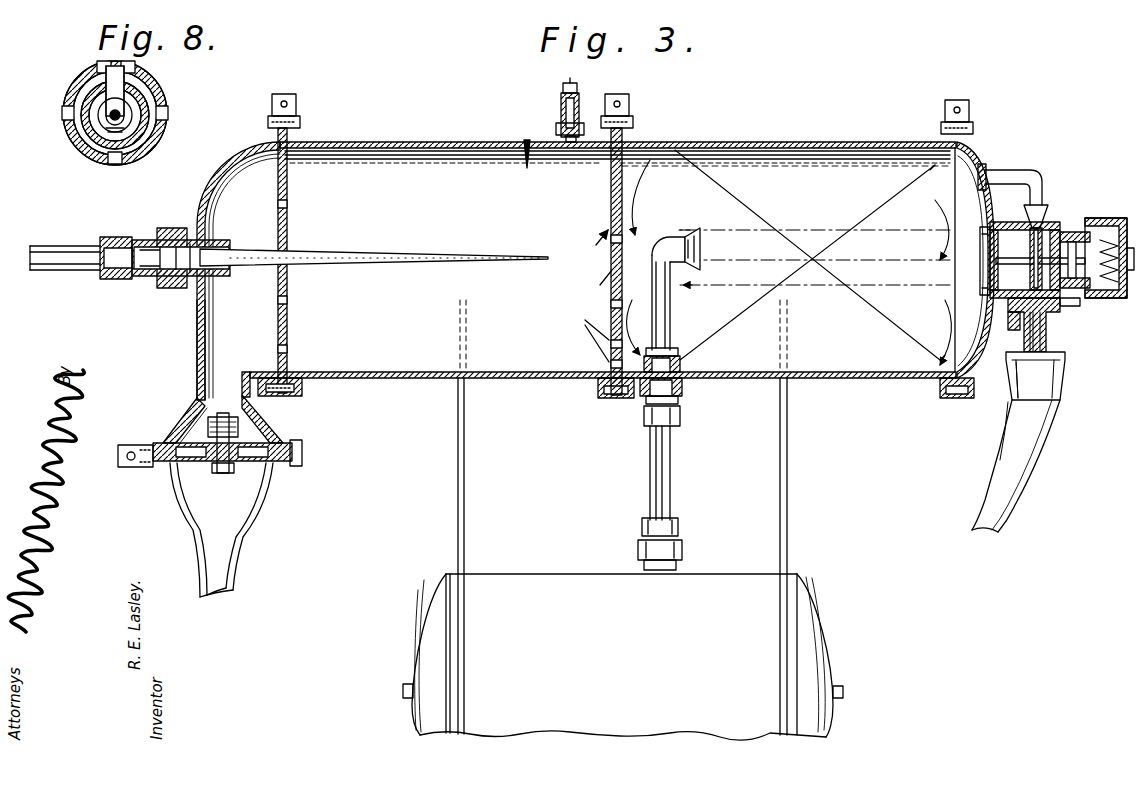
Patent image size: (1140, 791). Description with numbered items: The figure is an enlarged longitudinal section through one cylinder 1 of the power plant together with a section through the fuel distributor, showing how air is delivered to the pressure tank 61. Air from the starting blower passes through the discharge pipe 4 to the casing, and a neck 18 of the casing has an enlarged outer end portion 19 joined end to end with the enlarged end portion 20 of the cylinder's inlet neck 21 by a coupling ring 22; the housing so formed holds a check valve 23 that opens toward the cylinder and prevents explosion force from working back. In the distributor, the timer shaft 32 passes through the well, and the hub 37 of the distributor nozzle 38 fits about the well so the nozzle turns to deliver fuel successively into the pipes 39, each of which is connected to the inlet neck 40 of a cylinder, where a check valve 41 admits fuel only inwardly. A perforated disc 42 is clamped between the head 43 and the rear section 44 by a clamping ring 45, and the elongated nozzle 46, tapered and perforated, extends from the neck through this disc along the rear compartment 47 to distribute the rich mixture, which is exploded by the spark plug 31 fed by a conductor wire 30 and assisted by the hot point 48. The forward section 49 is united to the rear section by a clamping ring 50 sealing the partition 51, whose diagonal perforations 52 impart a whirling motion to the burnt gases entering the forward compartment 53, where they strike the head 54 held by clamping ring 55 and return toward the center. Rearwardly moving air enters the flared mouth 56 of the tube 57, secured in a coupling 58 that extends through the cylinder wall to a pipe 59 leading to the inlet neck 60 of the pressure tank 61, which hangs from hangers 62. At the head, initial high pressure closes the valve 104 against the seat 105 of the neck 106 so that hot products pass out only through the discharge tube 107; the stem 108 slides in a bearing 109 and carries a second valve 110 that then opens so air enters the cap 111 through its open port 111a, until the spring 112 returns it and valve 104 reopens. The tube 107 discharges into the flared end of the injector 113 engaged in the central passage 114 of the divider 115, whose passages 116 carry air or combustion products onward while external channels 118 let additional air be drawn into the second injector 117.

In FIG. 3, the cylinder 1 is at (452, 135).
In FIG. 3, the discharge pipe 4 is at (645, 222).
In FIG. 3, the neck 18 is at (230, 563).
In FIG. 3, the enlarged outer end portion 19 is at (265, 487).
In FIG. 3, the enlarged end portion 20 is at (270, 432).
In FIG. 3, the inlet neck 21 is at (196, 386).
In FIG. 3, the coupling ring 22 is at (303, 457).
In FIG. 3, the check valve 23 is at (255, 470).
In FIG. 3, the conductor wire 30 is at (560, 88).
In FIG. 3, the spark plug 31 is at (582, 110).
In FIG. 8, the shaft 32 is at (115, 135).
In FIG. 8, the hub 37 is at (68, 145).
In FIG. 8, the distributor nozzle 38 is at (130, 85).
In FIG. 3, the pipe 39 is at (58, 244).
In FIG. 3, the inlet neck 40 is at (155, 228).
In FIG. 3, the check valve 41 is at (150, 278).
In FIG. 3, the perforated disc 42 is at (290, 284).
In FIG. 3, the head 43 is at (232, 152).
In FIG. 3, the rear section 44 is at (405, 141).
In FIG. 3, the clamping ring 45 is at (302, 121).
In FIG. 3, the elongated nozzle 46 is at (268, 275).
In FIG. 3, the rear compartment 47 is at (480, 160).
In FIG. 3, the hot point 48 is at (526, 170).
In FIG. 3, the forward section 49 is at (826, 150).
In FIG. 3, the clamping ring 50 is at (636, 124).
In FIG. 3, the partition 51 is at (596, 285).
In FIG. 3, the perforations 52 is at (603, 296).
In FIG. 3, the forward compartment 53 is at (754, 155).
In FIG. 3, the head 54 is at (975, 150).
In FIG. 3, the clamping ring 55 is at (940, 126).
In FIG. 3, the flared mouth 56 is at (701, 248).
In FIG. 3, the tube 57 is at (671, 314).
In FIG. 3, the coupling 58 is at (683, 362).
In FIG. 3, the pipe 59 is at (672, 470).
In FIG. 3, the inlet neck 60 is at (685, 558).
In FIG. 3, the pressure tank 61 is at (578, 592).
In FIG. 3, the hangers 62 is at (789, 466).
In FIG. 3, the valve 104 is at (978, 280).
In FIG. 3, the seat 105 is at (1002, 224).
In FIG. 3, the neck 106 is at (1050, 312).
In FIG. 3, the discharge tube 107 is at (1022, 170).
In FIG. 3, the stem 108 is at (1040, 273).
In FIG. 3, the bearing 109 is at (1080, 244).
In FIG. 3, the second valve 110 is at (1100, 217).
In FIG. 3, the cap 111 is at (1105, 300).
In FIG. 3, the open port 111a is at (1132, 236).
In FIG. 3, the spring 112 is at (1082, 302).
In FIG. 3, the injector 113 is at (1052, 216).
In FIG. 3, the central passage 114 is at (1042, 330).
In FIG. 3, the divider 115 is at (1022, 380).
In FIG. 3, the passages 116 is at (1010, 430).
In FIG. 3, the second injector 117 is at (1038, 440).
In FIG. 3, the external channels 118 is at (1050, 358).